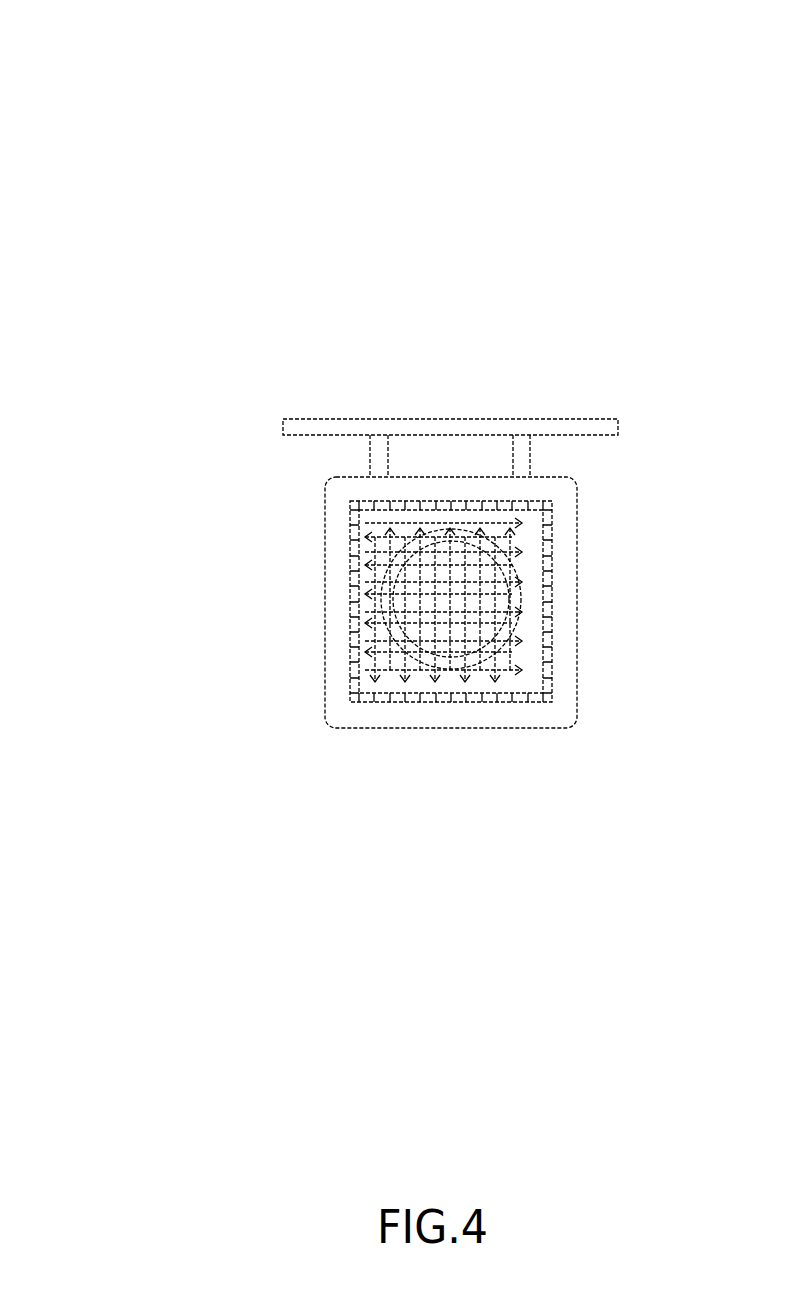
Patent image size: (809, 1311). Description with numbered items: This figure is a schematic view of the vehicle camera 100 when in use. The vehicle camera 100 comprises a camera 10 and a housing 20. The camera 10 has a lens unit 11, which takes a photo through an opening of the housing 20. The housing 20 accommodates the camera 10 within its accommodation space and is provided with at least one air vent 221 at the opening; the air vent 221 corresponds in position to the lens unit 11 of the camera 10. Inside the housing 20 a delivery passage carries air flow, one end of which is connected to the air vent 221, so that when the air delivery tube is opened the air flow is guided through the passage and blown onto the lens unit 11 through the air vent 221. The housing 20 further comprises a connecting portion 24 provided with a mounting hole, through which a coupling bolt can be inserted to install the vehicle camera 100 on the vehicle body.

The vehicle camera 100 is at (167, 160).
The connecting portion 24 is at (568, 428).
The housing 20 is at (562, 718).
The air vent 221 is at (353, 673).
The camera 10 is at (535, 620).
The lens unit 11 is at (463, 670).